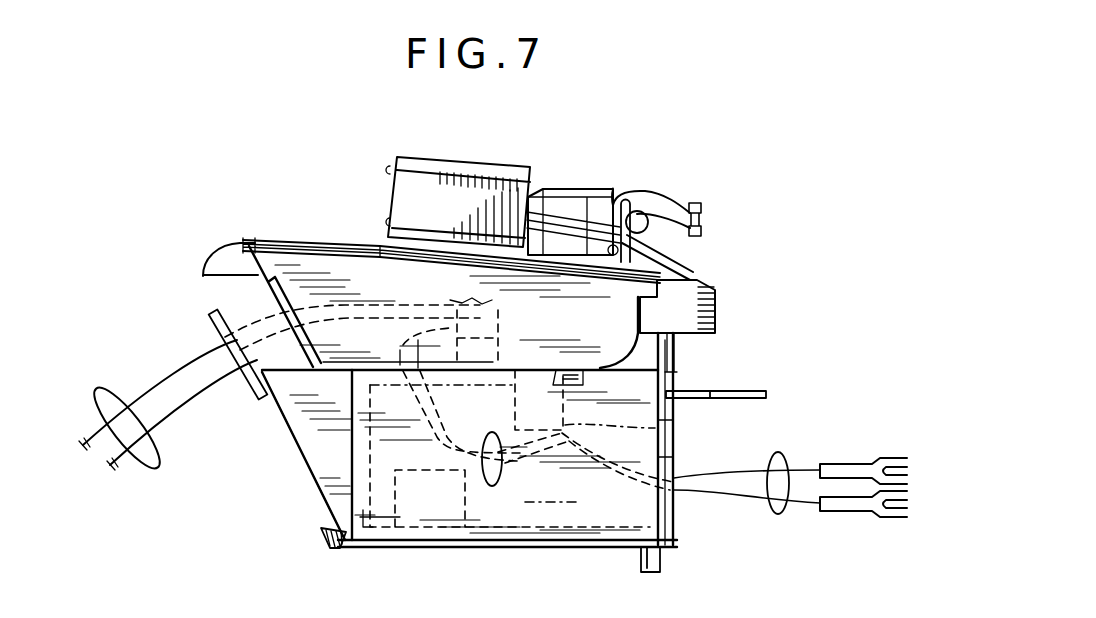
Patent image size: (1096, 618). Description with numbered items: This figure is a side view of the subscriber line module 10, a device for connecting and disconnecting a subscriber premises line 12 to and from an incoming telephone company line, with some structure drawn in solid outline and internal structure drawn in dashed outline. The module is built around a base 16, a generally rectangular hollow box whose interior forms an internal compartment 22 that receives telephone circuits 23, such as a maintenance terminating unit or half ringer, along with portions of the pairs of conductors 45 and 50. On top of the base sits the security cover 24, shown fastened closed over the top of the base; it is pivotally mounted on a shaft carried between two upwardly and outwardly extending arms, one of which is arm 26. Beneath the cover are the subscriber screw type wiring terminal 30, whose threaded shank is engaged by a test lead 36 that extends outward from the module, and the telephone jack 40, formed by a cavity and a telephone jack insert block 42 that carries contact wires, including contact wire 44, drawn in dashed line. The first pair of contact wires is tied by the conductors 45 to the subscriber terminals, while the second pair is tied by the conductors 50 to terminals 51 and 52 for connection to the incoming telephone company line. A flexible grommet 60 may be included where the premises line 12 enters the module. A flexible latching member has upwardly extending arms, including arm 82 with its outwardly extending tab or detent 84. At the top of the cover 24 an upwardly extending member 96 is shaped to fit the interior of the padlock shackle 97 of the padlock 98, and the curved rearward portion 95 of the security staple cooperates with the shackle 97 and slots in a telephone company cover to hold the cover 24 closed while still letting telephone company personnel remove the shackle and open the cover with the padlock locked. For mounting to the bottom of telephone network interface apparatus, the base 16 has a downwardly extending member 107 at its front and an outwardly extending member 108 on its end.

The subscriber line module 10 is at (312, 192).
The subscriber premises line 12 is at (105, 390).
The base 16 is at (352, 442).
The internal compartment 22 is at (521, 449).
The telephone circuits 23 is at (393, 512).
The cover 24 is at (288, 238).
The arm 26 is at (203, 278).
The subscriber screw type wiring terminal 30 is at (445, 298).
The test lead 36 is at (735, 390).
The telephone jack 40 is at (530, 392).
The telephone jack insert block 42 is at (658, 422).
The contact wire 44 is at (673, 353).
The pair of conductors 45 is at (492, 488).
The pair of conductors 50 is at (770, 450).
The terminal 51 is at (893, 456).
The terminal 52 is at (880, 512).
The grommet 60 is at (248, 385).
The arm 82 is at (635, 197).
The tab or detent 84 is at (667, 250).
The curved rearward portion 95 is at (613, 205).
The upwardly extending member 96 is at (575, 192).
The padlock shackle 97 is at (608, 200).
The padlock 98 is at (450, 156).
The downwardly extending member 107 is at (648, 577).
The outwardly extending member 108 is at (318, 545).